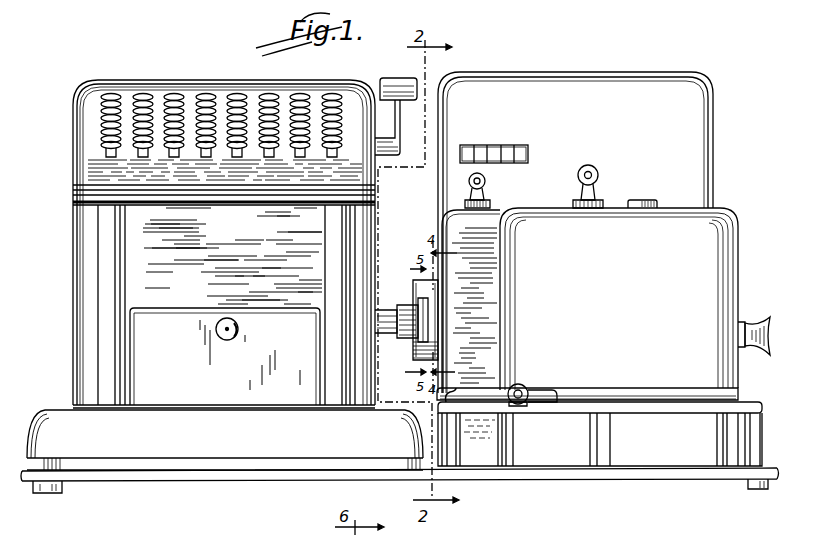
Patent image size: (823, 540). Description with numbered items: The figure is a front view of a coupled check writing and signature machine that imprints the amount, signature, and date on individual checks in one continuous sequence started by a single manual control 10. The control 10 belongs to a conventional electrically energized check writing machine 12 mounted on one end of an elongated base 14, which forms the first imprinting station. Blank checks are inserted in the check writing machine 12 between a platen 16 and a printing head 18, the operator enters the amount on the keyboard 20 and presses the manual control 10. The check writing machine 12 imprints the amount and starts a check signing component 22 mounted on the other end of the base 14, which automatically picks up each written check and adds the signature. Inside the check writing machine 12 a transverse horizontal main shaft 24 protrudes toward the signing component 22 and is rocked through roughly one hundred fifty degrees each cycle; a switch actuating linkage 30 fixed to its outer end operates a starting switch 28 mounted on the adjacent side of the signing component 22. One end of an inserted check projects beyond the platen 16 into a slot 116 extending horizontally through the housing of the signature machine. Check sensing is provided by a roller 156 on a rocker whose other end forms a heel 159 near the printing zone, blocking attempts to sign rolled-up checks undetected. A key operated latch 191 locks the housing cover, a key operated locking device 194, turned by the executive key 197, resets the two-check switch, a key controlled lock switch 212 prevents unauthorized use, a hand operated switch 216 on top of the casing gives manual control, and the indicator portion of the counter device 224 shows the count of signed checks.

The manual control 10 is at (388, 78).
The check writing machine 12 is at (70, 308).
The elongated base 14 is at (283, 480).
The platen 16 is at (205, 412).
The printing head 18 is at (170, 342).
The keyboard 20 is at (176, 97).
The check signing component 22 is at (633, 72).
The main shaft 24 is at (373, 333).
The starting switch 28 is at (436, 312).
The switch actuating linkage 30 is at (424, 298).
The slot 116 is at (450, 400).
The roller 156 is at (520, 404).
The heel 159 is at (547, 402).
The key operated latch 191 is at (752, 318).
The key operated locking device 194 is at (580, 198).
The executive key 197 is at (592, 192).
The key controlled lock switch 212 is at (484, 199).
The hand operated switch 216 is at (641, 200).
The counter device 224 is at (490, 144).